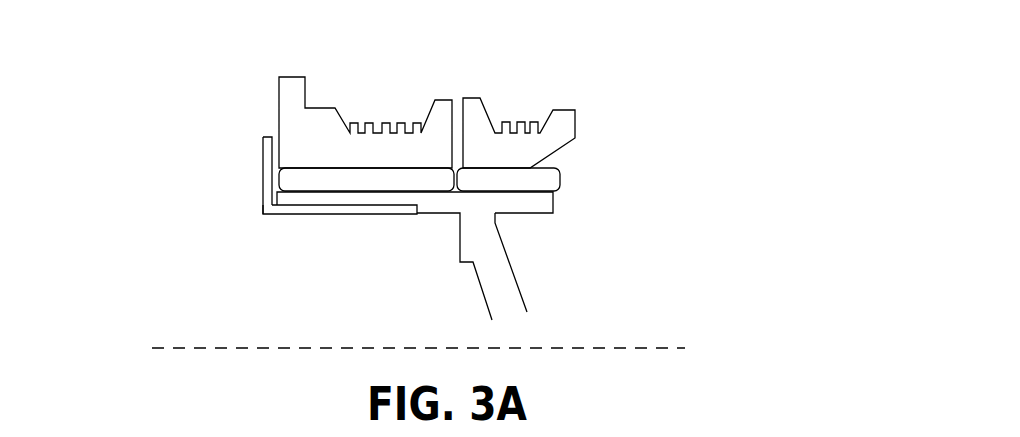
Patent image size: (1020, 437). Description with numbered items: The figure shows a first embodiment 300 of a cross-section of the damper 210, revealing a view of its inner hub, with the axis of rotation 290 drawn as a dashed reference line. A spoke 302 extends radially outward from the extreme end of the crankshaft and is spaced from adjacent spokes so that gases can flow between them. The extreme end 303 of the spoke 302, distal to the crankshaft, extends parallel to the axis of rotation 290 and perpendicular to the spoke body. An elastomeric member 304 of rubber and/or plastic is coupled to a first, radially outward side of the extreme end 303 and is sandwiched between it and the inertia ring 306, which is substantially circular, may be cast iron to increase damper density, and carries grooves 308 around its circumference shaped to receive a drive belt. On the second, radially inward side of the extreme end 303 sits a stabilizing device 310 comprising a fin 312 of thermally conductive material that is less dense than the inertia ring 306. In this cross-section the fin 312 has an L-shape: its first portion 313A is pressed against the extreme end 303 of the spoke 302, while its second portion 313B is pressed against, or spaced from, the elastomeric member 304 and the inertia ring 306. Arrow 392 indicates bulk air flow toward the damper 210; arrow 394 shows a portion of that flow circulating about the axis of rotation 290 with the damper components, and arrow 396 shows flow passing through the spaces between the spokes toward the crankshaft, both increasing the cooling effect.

The first embodiment 300 is at (640, 28).
The damper 210 is at (189, 90).
The grooves 308 is at (386, 99).
The inertia ring 306 is at (576, 122).
The elastomeric member 304 is at (561, 171).
The extreme end 303 is at (437, 216).
The spoke 302 is at (508, 259).
The stabilizing device 310 is at (210, 173).
The second portion 313B is at (263, 147).
The fin 312 is at (263, 218).
The first portion 313A is at (340, 216).
The arrow 392 is at (128, 244).
The arrow 394 is at (380, 328).
The arrow 396 is at (558, 268).
The axis of rotation 290 is at (170, 347).